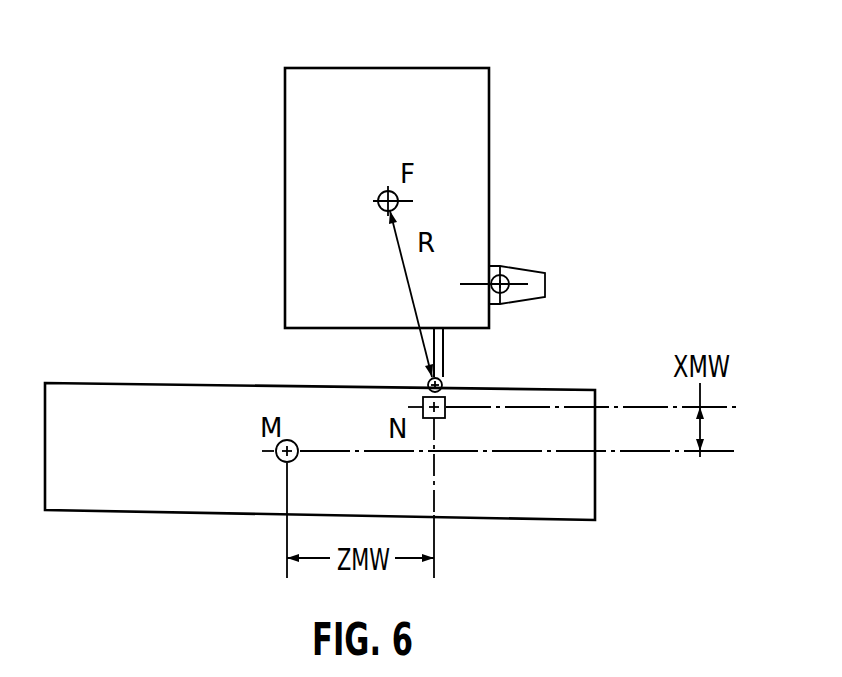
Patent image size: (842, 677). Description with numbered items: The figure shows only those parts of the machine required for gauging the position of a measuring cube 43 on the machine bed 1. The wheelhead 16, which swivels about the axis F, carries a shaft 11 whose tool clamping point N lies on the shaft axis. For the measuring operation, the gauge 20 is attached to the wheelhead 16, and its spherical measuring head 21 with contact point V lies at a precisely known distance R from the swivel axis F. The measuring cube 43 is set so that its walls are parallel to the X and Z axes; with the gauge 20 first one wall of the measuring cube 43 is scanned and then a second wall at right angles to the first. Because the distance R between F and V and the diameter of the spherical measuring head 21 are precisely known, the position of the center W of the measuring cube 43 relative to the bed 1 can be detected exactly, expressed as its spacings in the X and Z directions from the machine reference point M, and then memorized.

The workpiece table 1 is at (101, 456).
The shaft 11 is at (534, 256).
The wheelhead 16 is at (272, 122).
The gauge 20 is at (425, 338).
The spherical measuring head 21 is at (427, 385).
The measuring cube 43 is at (452, 390).